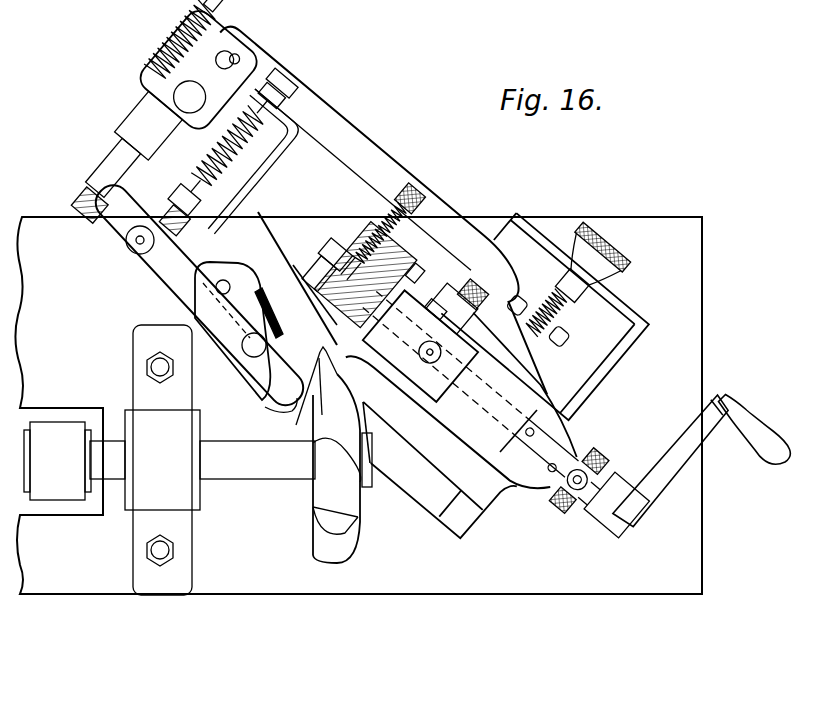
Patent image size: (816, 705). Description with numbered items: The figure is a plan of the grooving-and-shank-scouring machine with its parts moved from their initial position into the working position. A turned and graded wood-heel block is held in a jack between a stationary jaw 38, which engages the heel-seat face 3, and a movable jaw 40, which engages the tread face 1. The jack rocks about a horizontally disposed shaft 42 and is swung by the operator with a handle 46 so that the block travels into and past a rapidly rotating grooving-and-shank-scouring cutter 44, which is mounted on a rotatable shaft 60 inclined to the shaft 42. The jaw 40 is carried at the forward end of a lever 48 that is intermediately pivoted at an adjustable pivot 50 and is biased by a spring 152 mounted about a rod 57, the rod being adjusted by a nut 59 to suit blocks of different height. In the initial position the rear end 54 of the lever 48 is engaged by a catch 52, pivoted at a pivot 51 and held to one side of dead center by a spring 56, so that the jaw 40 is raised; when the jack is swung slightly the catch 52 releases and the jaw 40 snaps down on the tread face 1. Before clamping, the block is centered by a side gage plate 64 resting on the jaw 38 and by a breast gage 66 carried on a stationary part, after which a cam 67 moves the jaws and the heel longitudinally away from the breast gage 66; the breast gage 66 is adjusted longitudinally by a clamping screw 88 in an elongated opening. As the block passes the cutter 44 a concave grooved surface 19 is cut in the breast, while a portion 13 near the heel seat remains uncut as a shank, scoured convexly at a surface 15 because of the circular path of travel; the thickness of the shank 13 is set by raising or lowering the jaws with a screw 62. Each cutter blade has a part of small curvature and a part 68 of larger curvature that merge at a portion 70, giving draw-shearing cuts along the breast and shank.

The tread face 1 is at (304, 396).
The heel-seat face 3 is at (323, 327).
The shank 13 is at (343, 357).
The convex surface 15 is at (321, 349).
The grooved surface 19 is at (320, 360).
The jaw 38 is at (310, 320).
The jaw 40 is at (280, 410).
The shaft 42 is at (390, 275).
The grooving-and-shank-scouring cutter 44 is at (338, 550).
The handle 46 is at (768, 460).
The lever 48 is at (158, 297).
The pivot 50 is at (247, 352).
The pivot 51 is at (133, 125).
The catch 52 is at (122, 139).
The rear end 54 is at (84, 203).
The spring 56 is at (157, 65).
The rod 57 is at (247, 182).
The nut 59 is at (283, 103).
The shaft 60 is at (256, 470).
The screw 62 is at (373, 230).
The side gage plate 64 is at (270, 318).
The breast gage 66 is at (412, 303).
The cam 67 is at (550, 500).
The part of larger curvature 68 is at (342, 547).
The merging portion 70 is at (323, 562).
The clamping screw 88 is at (448, 387).
The spring 152 is at (268, 165).